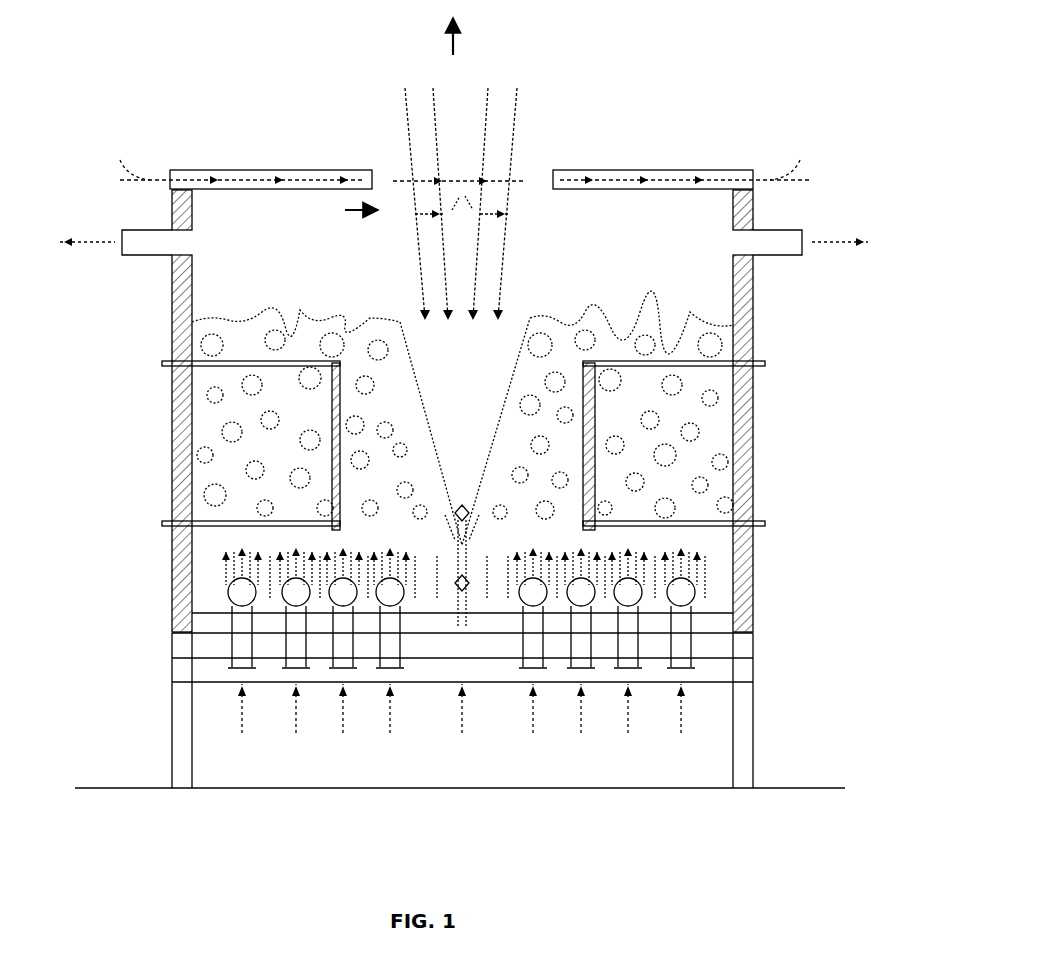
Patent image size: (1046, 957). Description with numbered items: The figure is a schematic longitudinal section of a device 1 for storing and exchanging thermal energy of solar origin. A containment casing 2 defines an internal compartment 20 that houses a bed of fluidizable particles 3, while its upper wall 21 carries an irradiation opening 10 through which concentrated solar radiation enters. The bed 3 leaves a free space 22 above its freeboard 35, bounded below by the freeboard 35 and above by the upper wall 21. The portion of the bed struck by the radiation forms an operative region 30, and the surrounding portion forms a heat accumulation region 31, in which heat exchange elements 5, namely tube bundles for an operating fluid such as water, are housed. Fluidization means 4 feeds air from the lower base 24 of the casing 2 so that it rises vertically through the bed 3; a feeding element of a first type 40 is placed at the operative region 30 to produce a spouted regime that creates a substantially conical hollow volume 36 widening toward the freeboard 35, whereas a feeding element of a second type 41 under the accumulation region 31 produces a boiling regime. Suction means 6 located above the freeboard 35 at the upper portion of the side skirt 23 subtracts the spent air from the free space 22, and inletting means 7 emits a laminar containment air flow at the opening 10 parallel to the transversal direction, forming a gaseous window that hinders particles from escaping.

The device for storing and exchanging thermal energy of solar origin 1 is at (710, 70).
The containment casing 2 is at (158, 300).
The bed of fluidizable particles 3 is at (705, 465).
The fluidization means 4 is at (230, 646).
The heat exchange elements 5 is at (192, 528).
The suction means 6 is at (116, 262).
The inletting means 7 is at (184, 185).
The irradiation opening 10 is at (540, 178).
The internal compartment 20 is at (687, 283).
The upper wall 21 is at (262, 165).
The free space 22 is at (445, 223).
The side skirt 23 is at (182, 345).
The lower base 24 is at (215, 685).
The operative region 30 is at (507, 428).
The heat accumulation region 31 is at (457, 446).
The freeboard 35 is at (596, 318).
The hollow volume 36 is at (464, 368).
The feeding element of a first type 40 is at (460, 606).
The feeding element of a second type 41 is at (690, 664).